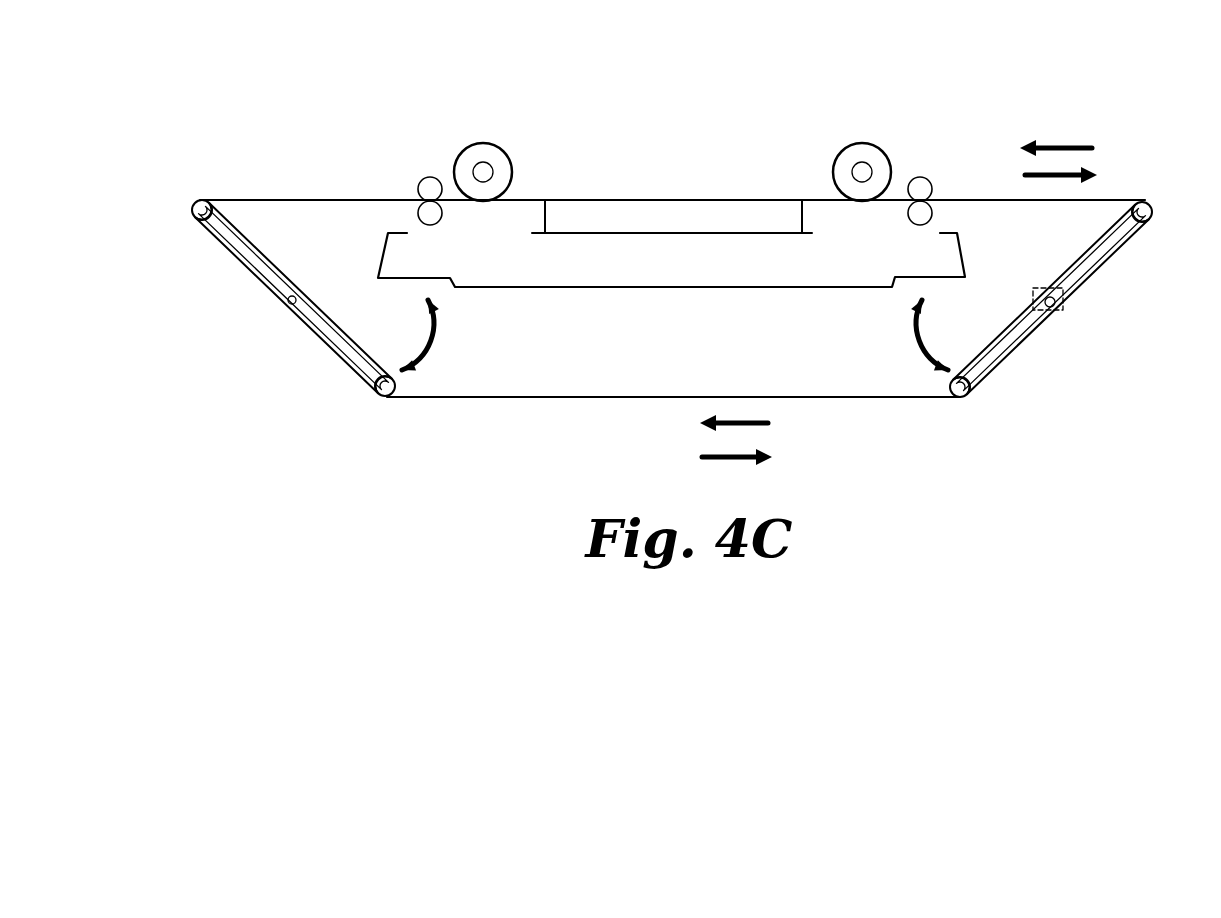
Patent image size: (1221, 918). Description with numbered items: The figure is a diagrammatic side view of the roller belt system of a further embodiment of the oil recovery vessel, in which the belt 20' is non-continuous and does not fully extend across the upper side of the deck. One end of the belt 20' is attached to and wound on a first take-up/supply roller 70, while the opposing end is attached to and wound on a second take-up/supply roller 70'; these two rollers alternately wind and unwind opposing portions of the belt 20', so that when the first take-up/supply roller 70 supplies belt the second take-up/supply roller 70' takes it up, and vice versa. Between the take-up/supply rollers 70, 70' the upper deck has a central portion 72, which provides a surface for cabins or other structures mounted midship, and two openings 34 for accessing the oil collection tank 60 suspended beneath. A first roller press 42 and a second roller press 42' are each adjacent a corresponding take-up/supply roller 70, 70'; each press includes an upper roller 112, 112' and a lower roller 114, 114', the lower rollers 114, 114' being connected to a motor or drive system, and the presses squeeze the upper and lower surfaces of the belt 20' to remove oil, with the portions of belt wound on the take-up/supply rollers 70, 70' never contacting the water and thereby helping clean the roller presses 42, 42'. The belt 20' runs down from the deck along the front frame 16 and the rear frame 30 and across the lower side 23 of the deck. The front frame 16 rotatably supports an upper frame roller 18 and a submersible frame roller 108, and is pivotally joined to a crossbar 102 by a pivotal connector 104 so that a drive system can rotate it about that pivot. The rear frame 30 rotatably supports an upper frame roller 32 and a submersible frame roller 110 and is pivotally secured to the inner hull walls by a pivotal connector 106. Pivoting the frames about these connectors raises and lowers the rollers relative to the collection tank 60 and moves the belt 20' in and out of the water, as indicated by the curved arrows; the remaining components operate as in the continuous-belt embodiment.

The front frame 16 is at (1126, 247).
The upper frame roller 18 is at (1146, 202).
The belt 20' is at (672, 151).
The lower side 23 is at (586, 415).
The rear frame 30 is at (322, 347).
The upper frame roller 32 is at (196, 202).
The openings 34 is at (540, 180).
The roller press 42 is at (415, 117).
The roller press 42' is at (937, 113).
The oil collection tank 60 is at (653, 270).
The first take-up/supply roller 70 is at (487, 119).
The second take-up/supply roller 70' is at (858, 119).
The central portion 72 is at (677, 180).
The crossbar 102 is at (1065, 313).
The pivotal connector 104 is at (1047, 320).
The pivotal connector 106 is at (286, 306).
The submersible frame roller 108 is at (968, 397).
The submersible frame roller 110 is at (376, 394).
The upper roller 112 is at (394, 164).
The upper roller 112' is at (959, 159).
The lower roller 114 is at (375, 221).
The lower roller 114' is at (984, 224).